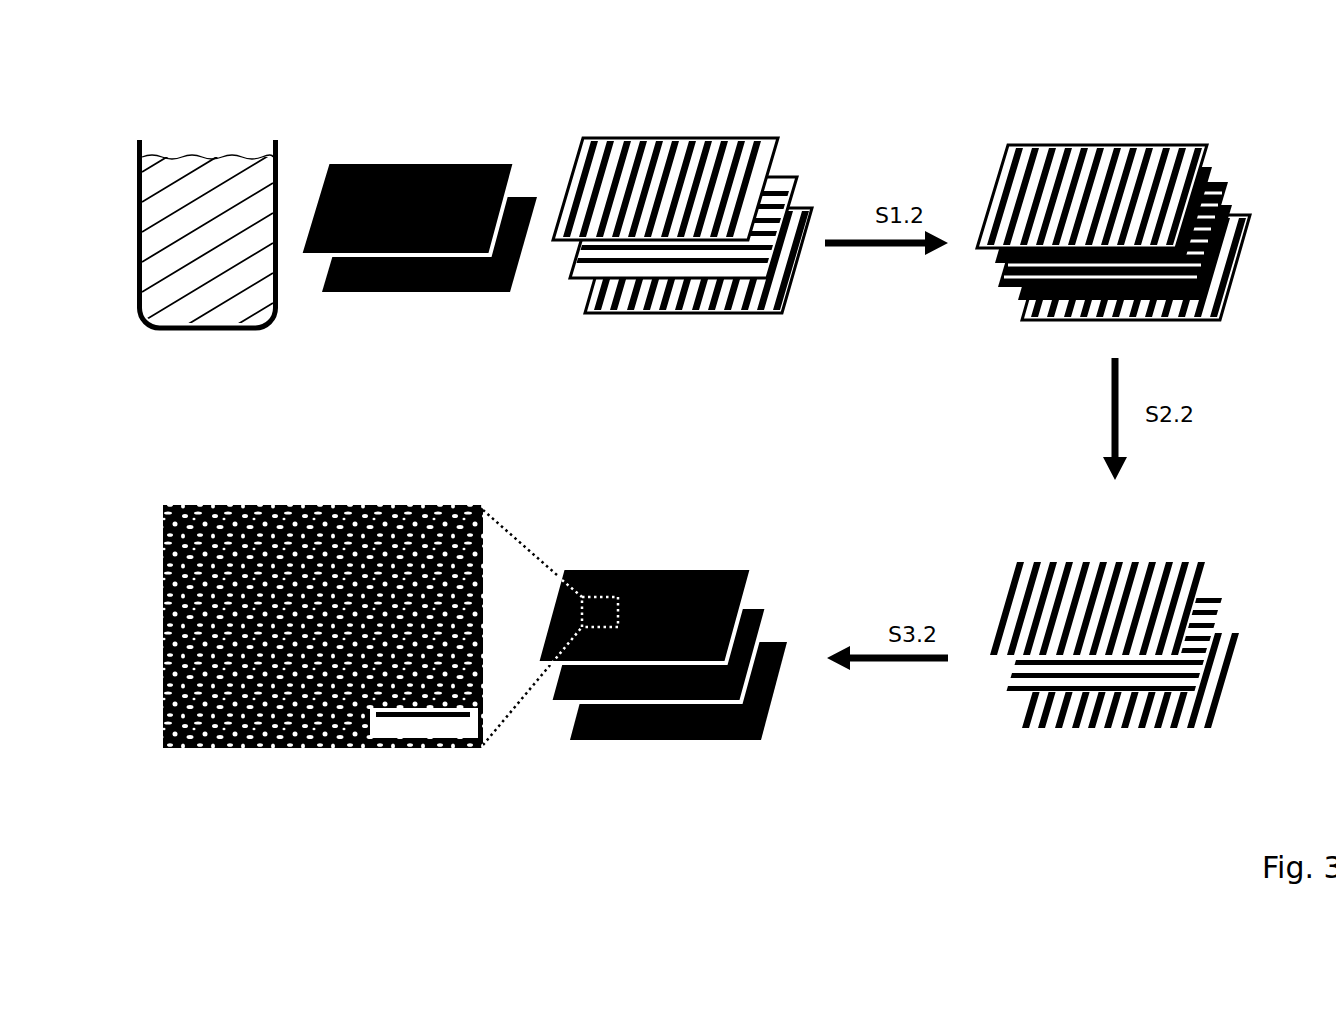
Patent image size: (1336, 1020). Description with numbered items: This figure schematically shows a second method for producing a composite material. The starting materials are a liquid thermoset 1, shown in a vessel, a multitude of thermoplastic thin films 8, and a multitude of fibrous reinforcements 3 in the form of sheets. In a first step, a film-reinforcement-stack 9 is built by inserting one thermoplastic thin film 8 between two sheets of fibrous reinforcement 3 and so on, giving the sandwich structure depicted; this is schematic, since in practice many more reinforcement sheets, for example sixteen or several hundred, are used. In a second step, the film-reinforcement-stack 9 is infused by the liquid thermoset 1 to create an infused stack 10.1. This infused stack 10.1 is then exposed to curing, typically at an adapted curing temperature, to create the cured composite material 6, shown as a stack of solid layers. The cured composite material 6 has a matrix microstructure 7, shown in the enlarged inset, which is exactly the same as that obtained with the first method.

The liquid thermoset 1 is at (203, 180).
The thermoplastic thin film 8 is at (523, 203).
The fibrous reinforcement 3 is at (795, 225).
The film-reinforcement-stack 9 is at (1165, 113).
The infused stack 10.1 is at (1233, 546).
The cured composite material 6 is at (776, 557).
The matrix microstructure 7 is at (218, 720).